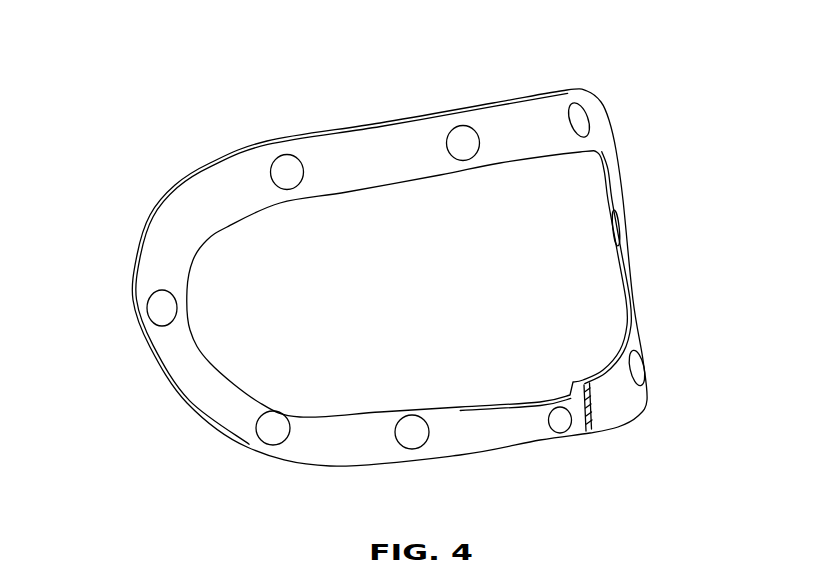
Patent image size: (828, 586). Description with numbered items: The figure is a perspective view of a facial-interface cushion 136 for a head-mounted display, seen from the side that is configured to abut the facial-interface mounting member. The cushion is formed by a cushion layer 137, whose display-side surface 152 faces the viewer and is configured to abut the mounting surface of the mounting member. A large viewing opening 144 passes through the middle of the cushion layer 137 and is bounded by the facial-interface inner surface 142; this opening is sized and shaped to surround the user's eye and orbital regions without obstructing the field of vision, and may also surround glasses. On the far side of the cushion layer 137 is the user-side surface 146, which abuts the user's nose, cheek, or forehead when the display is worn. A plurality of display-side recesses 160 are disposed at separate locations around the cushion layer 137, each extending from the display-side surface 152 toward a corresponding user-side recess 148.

The facial-interface cushion 136 is at (181, 117).
The cushion layer 137 is at (180, 178).
The facial-interface inner surface 142 is at (624, 351).
The viewing opening 144 is at (186, 267).
The user-side surface 146 is at (610, 200).
The user-side recess 148 is at (612, 233).
The display-side surface 152 is at (375, 158).
The display-side recess 160 is at (282, 159).